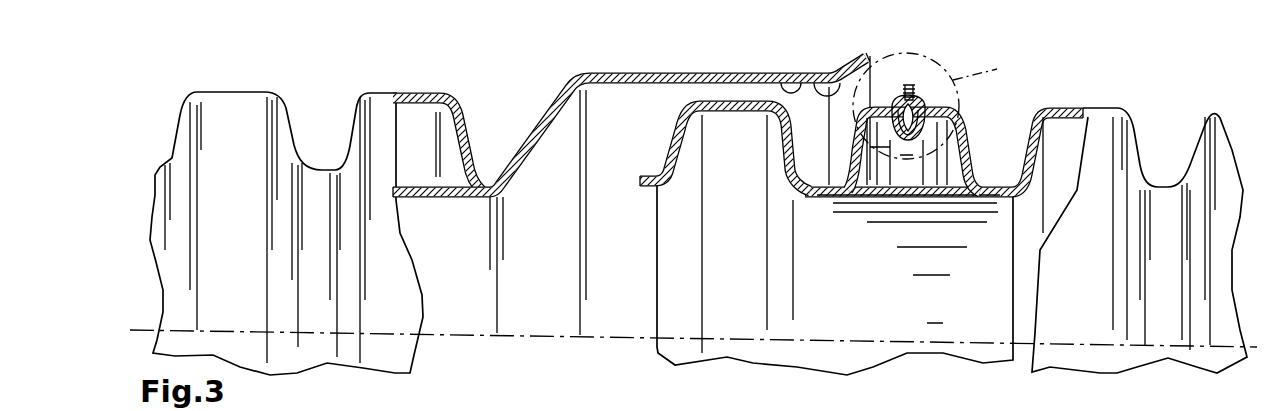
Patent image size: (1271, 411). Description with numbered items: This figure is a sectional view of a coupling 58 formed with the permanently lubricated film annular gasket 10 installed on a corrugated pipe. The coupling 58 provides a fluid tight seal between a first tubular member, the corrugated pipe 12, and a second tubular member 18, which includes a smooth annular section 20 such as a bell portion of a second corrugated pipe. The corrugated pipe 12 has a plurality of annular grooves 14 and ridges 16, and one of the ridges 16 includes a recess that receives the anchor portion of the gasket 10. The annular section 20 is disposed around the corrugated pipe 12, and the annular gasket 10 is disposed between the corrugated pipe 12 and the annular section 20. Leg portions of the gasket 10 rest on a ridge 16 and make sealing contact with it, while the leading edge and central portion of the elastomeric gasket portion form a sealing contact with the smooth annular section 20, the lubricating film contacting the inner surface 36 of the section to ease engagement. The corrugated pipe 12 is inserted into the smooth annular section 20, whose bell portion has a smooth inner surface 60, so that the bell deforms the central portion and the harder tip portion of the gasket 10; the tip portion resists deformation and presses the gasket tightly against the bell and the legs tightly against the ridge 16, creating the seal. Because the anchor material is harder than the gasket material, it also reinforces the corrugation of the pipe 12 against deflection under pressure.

The annular gasket 10 is at (929, 72).
The corrugated pipe 12 is at (664, 137).
The annular grooves 14 is at (1163, 188).
The ridges 16 is at (1086, 108).
The second tubular member 18 is at (374, 78).
The annular section 20 is at (676, 73).
The inner surface 36 is at (799, 74).
The coupling 58 is at (702, 57).
The smooth inner surface 60 is at (831, 75).